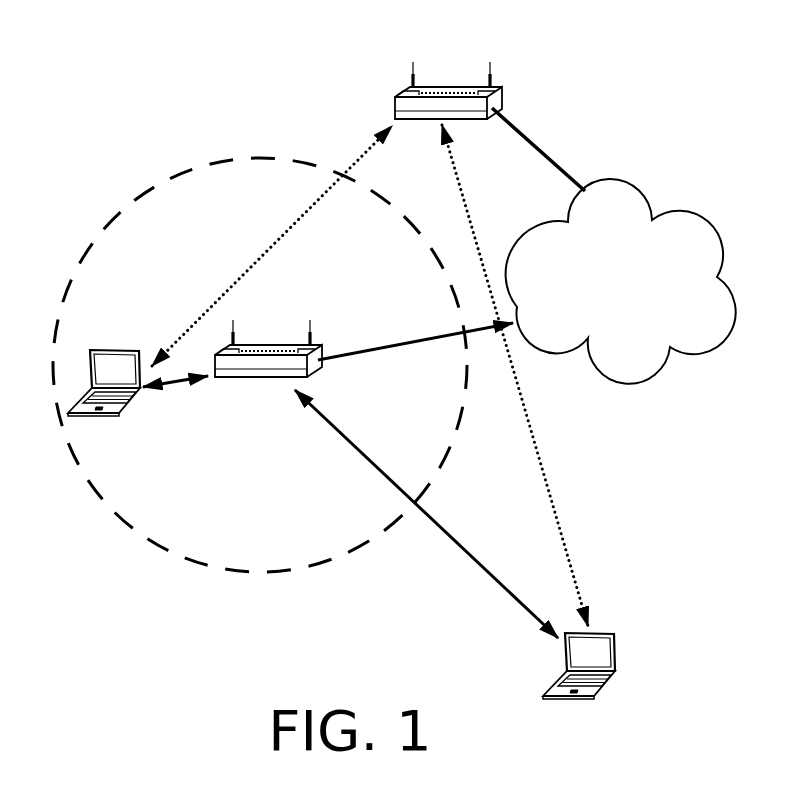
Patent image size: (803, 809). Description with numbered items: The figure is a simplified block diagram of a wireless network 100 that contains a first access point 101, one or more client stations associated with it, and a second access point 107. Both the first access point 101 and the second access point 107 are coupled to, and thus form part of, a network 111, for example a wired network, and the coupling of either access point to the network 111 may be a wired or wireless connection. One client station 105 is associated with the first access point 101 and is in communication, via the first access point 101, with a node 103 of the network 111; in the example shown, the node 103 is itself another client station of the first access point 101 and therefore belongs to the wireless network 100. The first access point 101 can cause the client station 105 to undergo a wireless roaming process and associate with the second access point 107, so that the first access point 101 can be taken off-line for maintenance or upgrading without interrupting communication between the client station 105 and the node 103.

The wireless network 100 is at (133, 72).
The first access point 101 is at (265, 348).
The node 103 is at (617, 637).
The client station 105 is at (125, 348).
The second access point 107 is at (440, 92).
The network 111 is at (634, 193).